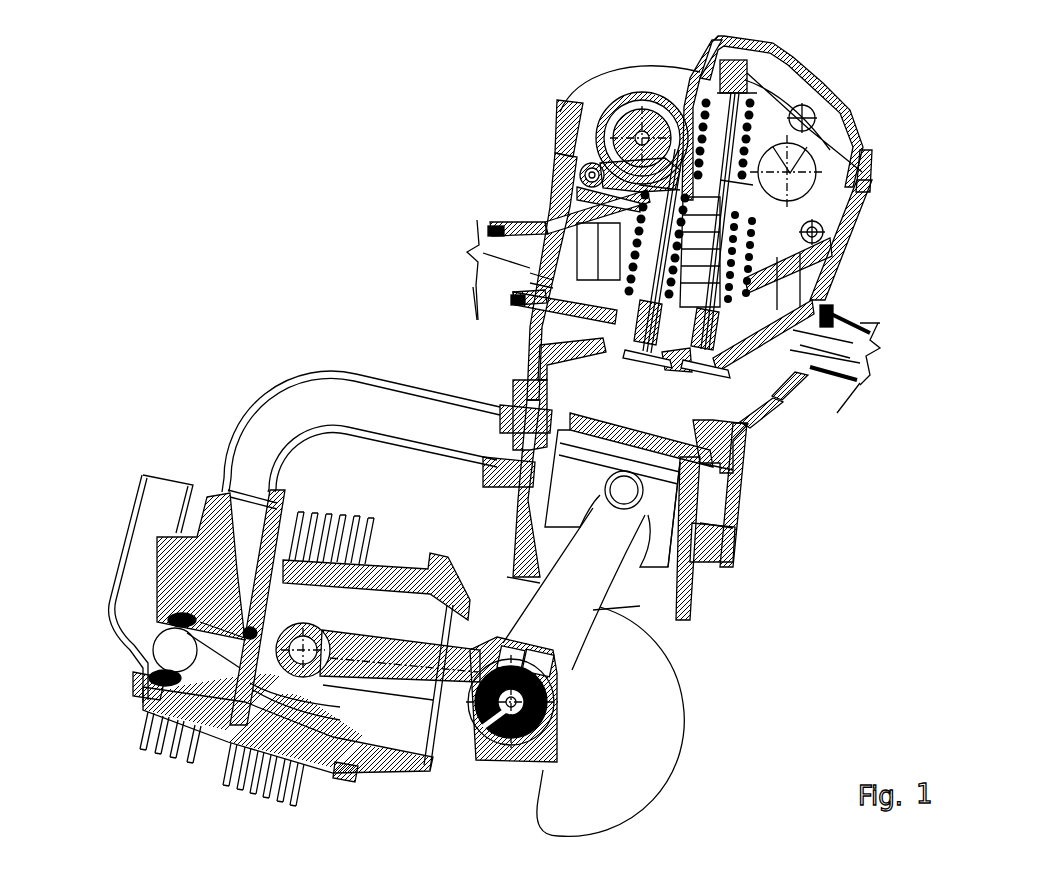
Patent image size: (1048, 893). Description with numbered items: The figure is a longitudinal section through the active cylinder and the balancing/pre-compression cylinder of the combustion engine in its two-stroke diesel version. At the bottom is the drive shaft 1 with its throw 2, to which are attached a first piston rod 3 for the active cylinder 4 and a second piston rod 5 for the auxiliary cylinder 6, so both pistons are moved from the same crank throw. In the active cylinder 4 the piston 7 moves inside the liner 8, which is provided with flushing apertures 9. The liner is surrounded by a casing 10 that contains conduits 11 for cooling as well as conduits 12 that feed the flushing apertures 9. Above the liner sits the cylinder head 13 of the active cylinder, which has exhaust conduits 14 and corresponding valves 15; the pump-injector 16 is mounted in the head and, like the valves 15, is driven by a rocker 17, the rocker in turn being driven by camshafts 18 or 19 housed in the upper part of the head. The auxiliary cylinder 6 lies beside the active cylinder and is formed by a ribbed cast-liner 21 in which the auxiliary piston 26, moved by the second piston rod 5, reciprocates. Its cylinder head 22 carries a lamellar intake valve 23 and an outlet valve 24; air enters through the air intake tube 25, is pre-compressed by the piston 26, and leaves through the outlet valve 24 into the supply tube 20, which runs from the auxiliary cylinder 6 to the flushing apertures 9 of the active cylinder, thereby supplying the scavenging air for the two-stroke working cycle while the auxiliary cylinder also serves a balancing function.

The drive shaft 1 is at (625, 672).
The throw 2 is at (550, 684).
The first piston rod 3 is at (557, 603).
The active cylinder 4 is at (812, 486).
The second piston rod 5 is at (366, 648).
The auxiliary cylinder 6 is at (387, 525).
The piston of the active cylinder 7 is at (682, 458).
The liner 8 is at (687, 600).
The flushing apertures 9 is at (707, 485).
The casing of the liner 10 is at (775, 435).
The cooling conduits 11 is at (538, 382).
The feed conduits 12 is at (523, 450).
The cylinder head of the active cylinder 13 is at (815, 277).
The exhaust conduits 14 is at (485, 270).
The valves 15 is at (612, 346).
The pump-injector 16 is at (860, 368).
The rocker 17 is at (770, 100).
The camshaft 18 is at (630, 137).
The camshaft 19 is at (795, 170).
The supply tube 20 is at (280, 414).
The ribbed cast-liner of the auxiliary cylinder 21 is at (357, 772).
The cylinder head of the auxiliary cylinder 22 is at (208, 493).
The lamellar intake valve 23 is at (220, 652).
The outlet valve 24 is at (280, 492).
The air intake tube 25 is at (146, 551).
The piston of the auxiliary cylinder 26 is at (330, 718).